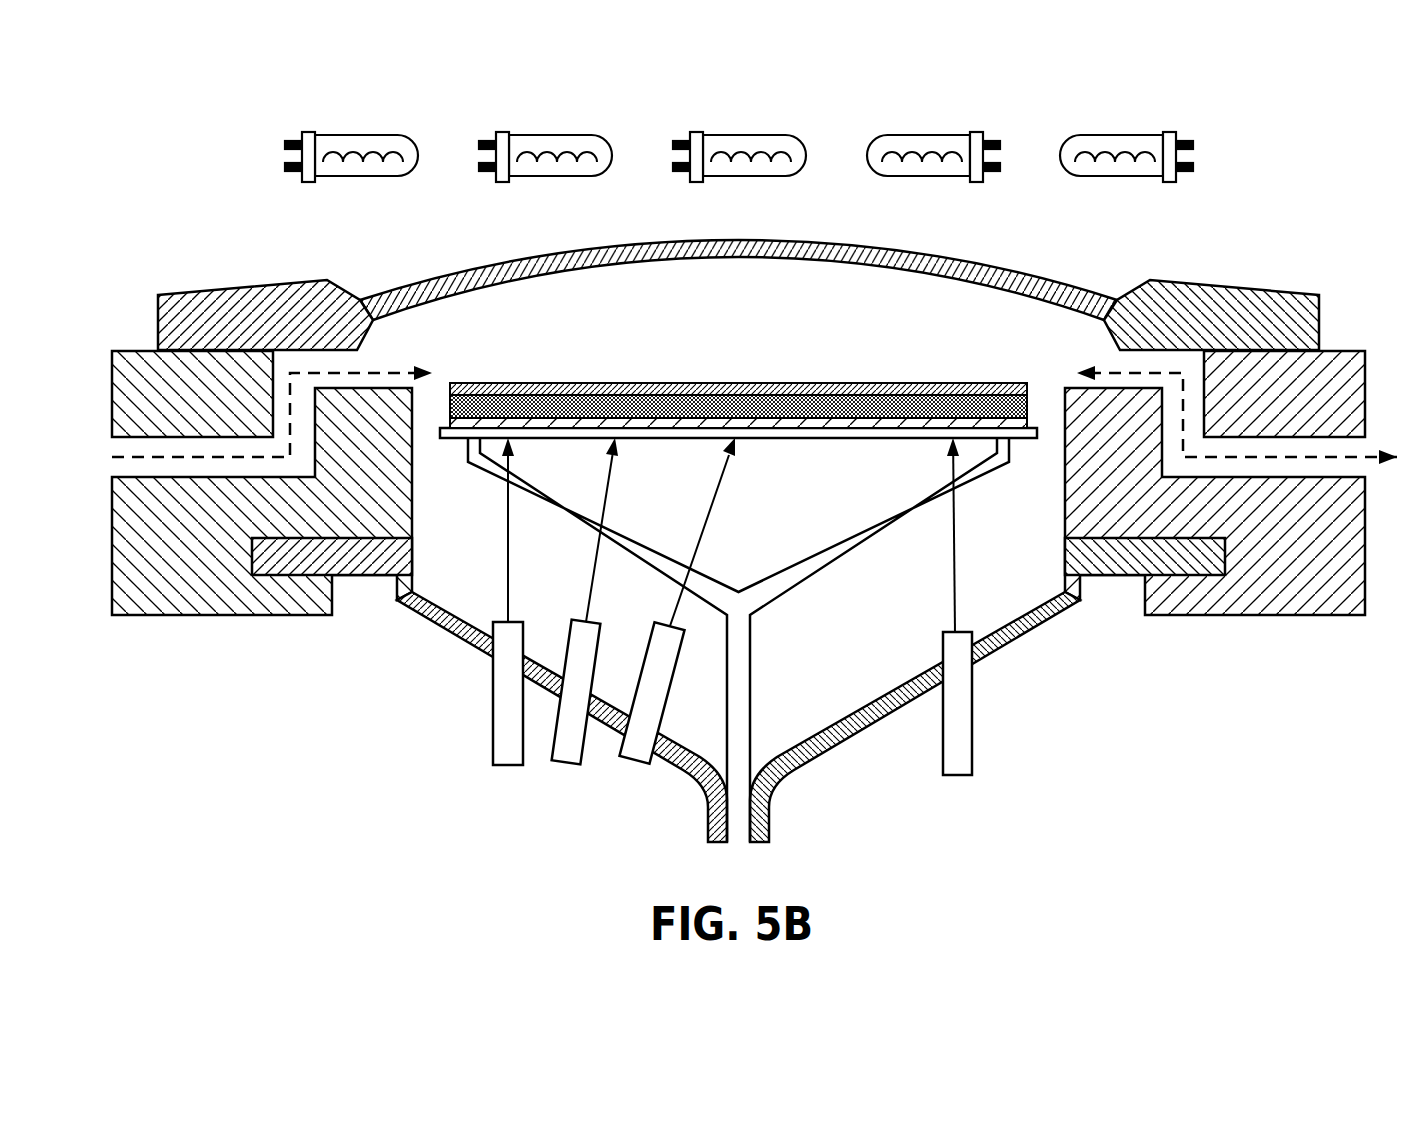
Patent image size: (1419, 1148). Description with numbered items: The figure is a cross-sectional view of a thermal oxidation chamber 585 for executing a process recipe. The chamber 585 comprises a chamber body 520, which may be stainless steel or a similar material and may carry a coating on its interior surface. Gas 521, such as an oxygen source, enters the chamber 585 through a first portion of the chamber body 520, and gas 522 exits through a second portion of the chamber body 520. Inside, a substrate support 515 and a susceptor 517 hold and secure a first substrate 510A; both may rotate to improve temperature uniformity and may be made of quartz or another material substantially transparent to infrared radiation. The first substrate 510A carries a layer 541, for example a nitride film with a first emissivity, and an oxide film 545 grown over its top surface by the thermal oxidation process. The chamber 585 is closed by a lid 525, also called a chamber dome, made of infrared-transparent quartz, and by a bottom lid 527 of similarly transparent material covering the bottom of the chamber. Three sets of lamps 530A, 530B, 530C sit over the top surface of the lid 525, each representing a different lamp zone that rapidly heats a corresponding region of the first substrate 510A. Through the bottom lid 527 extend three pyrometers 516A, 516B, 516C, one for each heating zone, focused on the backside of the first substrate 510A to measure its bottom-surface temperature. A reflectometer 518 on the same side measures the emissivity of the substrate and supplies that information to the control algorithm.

The first substrate 510A is at (742, 405).
The substrate support 515 is at (880, 528).
The pyrometer 516A is at (502, 767).
The pyrometer 516B is at (567, 763).
The pyrometer 516C is at (633, 767).
The susceptor 517 is at (870, 438).
The reflectometer 518 is at (967, 765).
The chamber body 520 is at (1297, 615).
The gas 521 is at (170, 457).
The gas 522 is at (1297, 457).
The lid 525 is at (1081, 292).
The bottom lid 527 is at (838, 765).
The lamps 530A is at (1108, 135).
The lamps 530B is at (922, 135).
The lamps 530C is at (742, 135).
The layer 541 is at (803, 428).
The oxide film 545 is at (905, 383).
The chamber 585 is at (1282, 114).